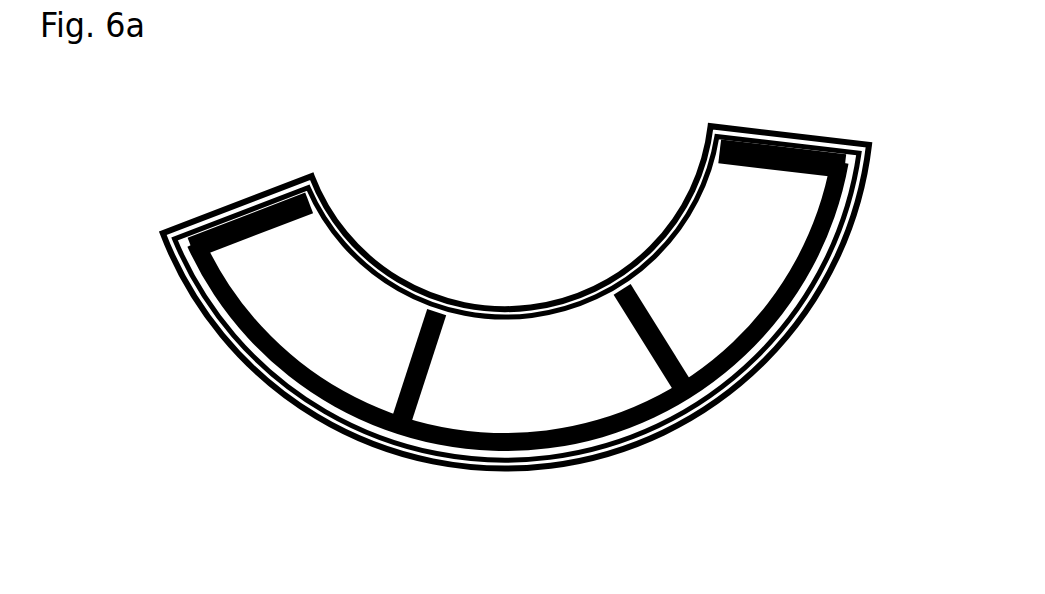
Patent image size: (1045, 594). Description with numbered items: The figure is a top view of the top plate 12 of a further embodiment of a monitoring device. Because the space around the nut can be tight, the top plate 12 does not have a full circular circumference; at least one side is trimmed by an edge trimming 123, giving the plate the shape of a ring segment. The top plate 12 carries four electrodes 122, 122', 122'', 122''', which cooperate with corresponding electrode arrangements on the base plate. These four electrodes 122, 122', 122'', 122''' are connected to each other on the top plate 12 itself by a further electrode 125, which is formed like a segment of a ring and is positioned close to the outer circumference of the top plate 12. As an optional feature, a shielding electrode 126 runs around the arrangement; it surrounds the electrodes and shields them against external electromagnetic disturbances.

The top plate 12 is at (851, 116).
The edge trimming 123 is at (678, 117).
The shielding electrode 126 is at (372, 265).
The further electrode 125 is at (295, 403).
The electrode 122 is at (251, 179).
The electrode 122' is at (425, 436).
The electrode 122'' is at (725, 370).
The electrode 122''' is at (819, 222).